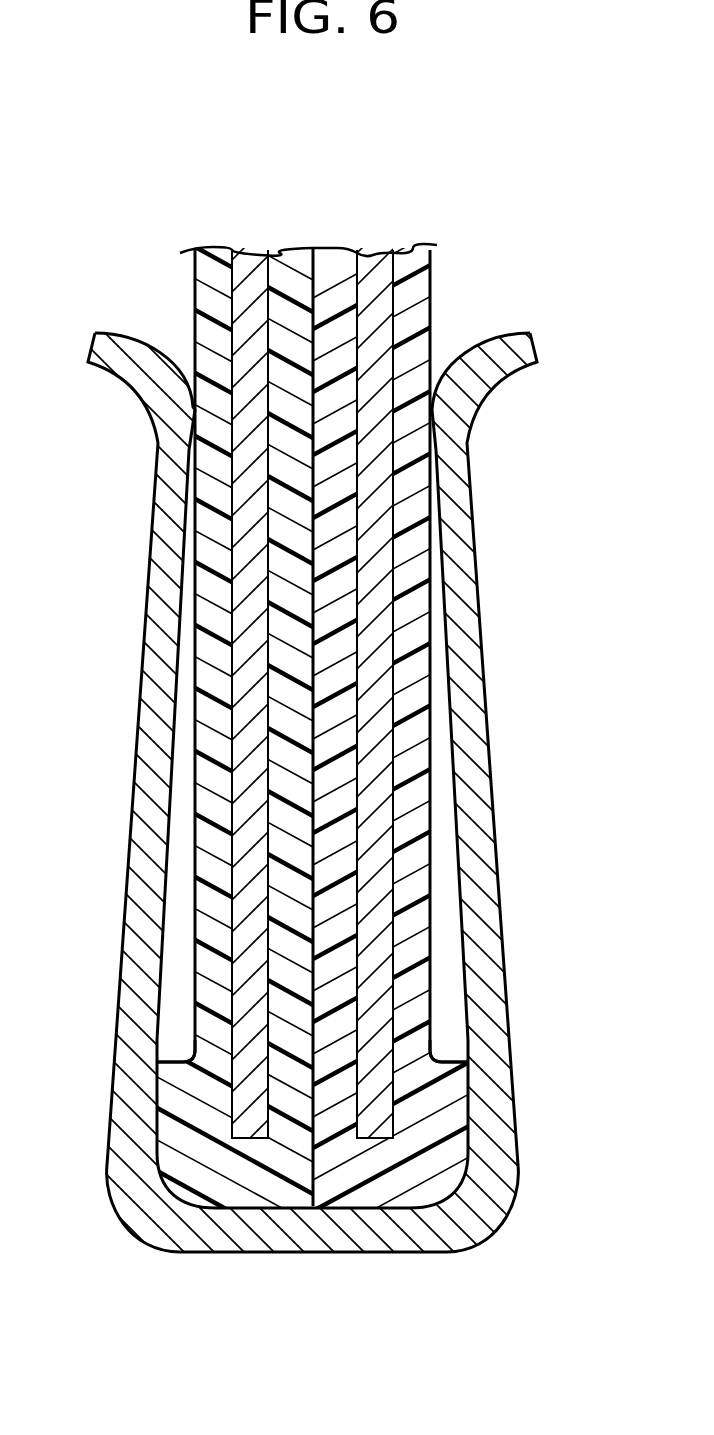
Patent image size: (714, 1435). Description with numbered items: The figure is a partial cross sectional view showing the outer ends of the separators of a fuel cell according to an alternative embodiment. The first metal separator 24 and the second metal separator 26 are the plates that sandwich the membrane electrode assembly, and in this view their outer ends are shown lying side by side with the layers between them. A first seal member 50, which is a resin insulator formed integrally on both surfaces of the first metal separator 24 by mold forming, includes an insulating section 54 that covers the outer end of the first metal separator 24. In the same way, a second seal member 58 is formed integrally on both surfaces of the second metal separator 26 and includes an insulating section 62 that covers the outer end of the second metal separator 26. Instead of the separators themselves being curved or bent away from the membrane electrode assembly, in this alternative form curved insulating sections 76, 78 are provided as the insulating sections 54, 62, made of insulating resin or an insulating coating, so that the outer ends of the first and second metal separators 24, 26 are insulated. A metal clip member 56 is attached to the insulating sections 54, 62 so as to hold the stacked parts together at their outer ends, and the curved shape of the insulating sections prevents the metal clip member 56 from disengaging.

The first metal separator 24 is at (368, 247).
The second metal separator 26 is at (260, 247).
The first seal member 50 is at (440, 680).
The insulating section 54 is at (410, 1147).
The metal clip member 56 is at (530, 1230).
The second seal member 58 is at (185, 680).
The insulating section 62 is at (225, 1148).
The curved insulating section 76 is at (440, 1093).
The curved insulating section 78 is at (200, 1092).